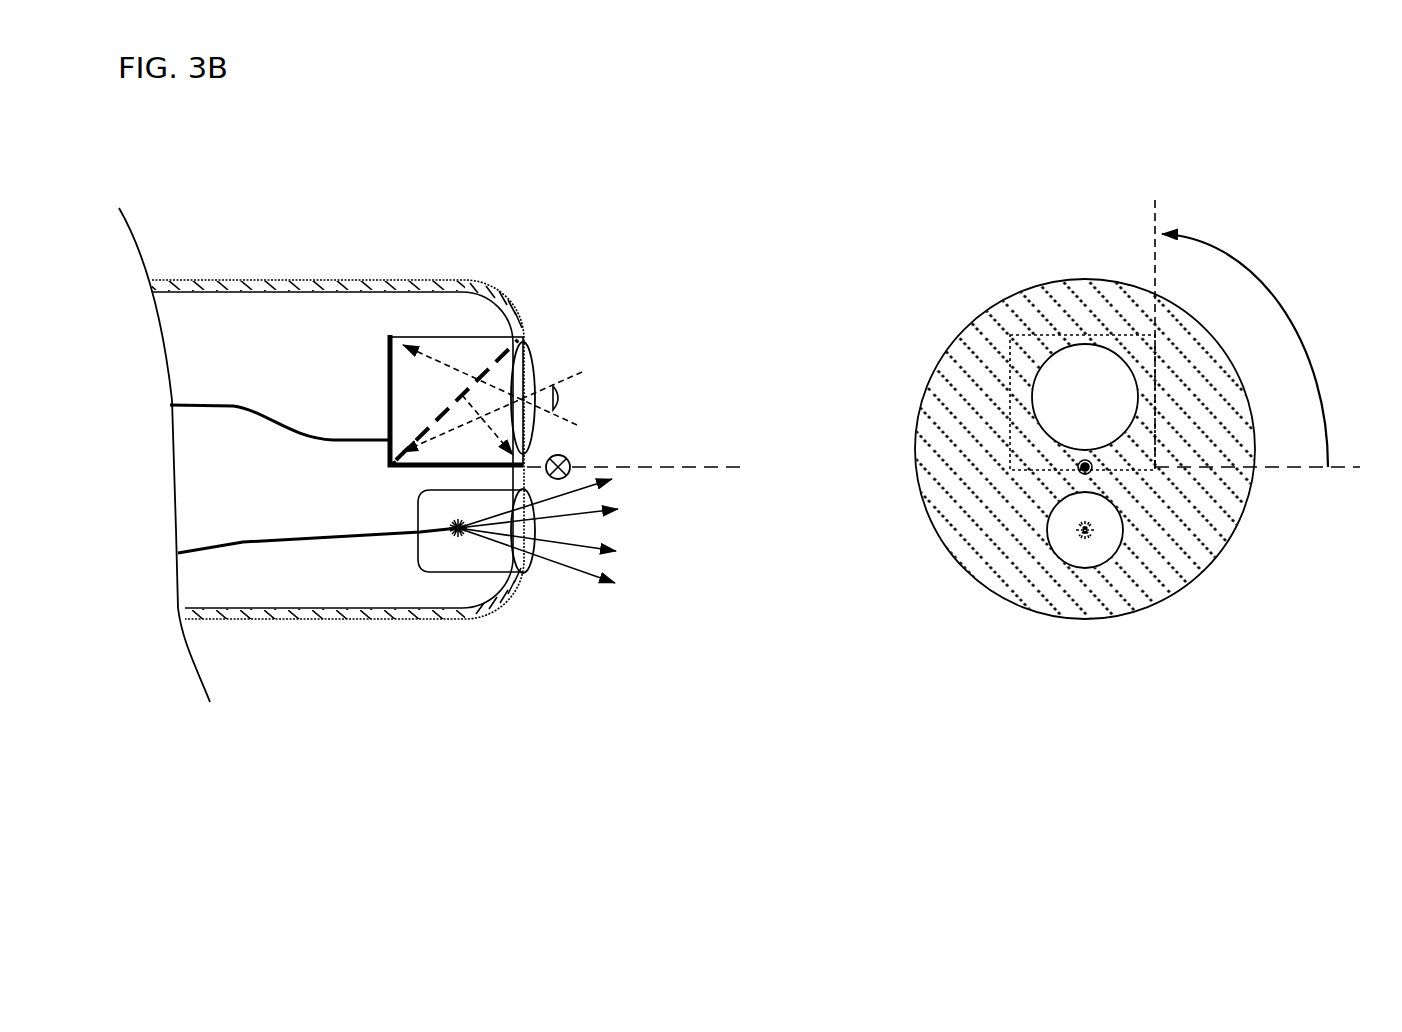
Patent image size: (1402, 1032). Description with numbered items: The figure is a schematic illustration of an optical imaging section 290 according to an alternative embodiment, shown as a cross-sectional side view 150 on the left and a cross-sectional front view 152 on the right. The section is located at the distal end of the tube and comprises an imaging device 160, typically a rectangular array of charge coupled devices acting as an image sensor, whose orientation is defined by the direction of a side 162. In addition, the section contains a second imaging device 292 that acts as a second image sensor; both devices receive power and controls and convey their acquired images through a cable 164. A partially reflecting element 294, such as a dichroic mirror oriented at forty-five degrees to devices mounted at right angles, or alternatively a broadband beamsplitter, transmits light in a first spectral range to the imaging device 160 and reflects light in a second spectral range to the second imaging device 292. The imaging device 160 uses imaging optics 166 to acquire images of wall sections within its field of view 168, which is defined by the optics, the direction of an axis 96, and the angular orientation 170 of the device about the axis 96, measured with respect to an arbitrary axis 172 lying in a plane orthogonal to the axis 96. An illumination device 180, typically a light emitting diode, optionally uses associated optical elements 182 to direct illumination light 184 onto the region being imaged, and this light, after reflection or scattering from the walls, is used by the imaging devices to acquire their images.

The axis 96 is at (712, 470).
The cross-sectional side view 150 is at (466, 776).
The cross-sectional front view 152 is at (1018, 776).
The imaging device 160 is at (388, 365).
The side 162 is at (1157, 397).
The cable 164 is at (248, 405).
The imaging optics 166 is at (537, 362).
The field of view 168 is at (558, 403).
The angular orientation 170 is at (1252, 268).
The arbitrary axis 172 is at (569, 460).
The illumination device 180 is at (462, 540).
The optical elements 182 is at (532, 566).
The illumination light 184 is at (628, 607).
The optical imaging section 290 is at (327, 620).
The second imaging device 292 is at (408, 468).
The partially reflecting element 294 is at (477, 398).